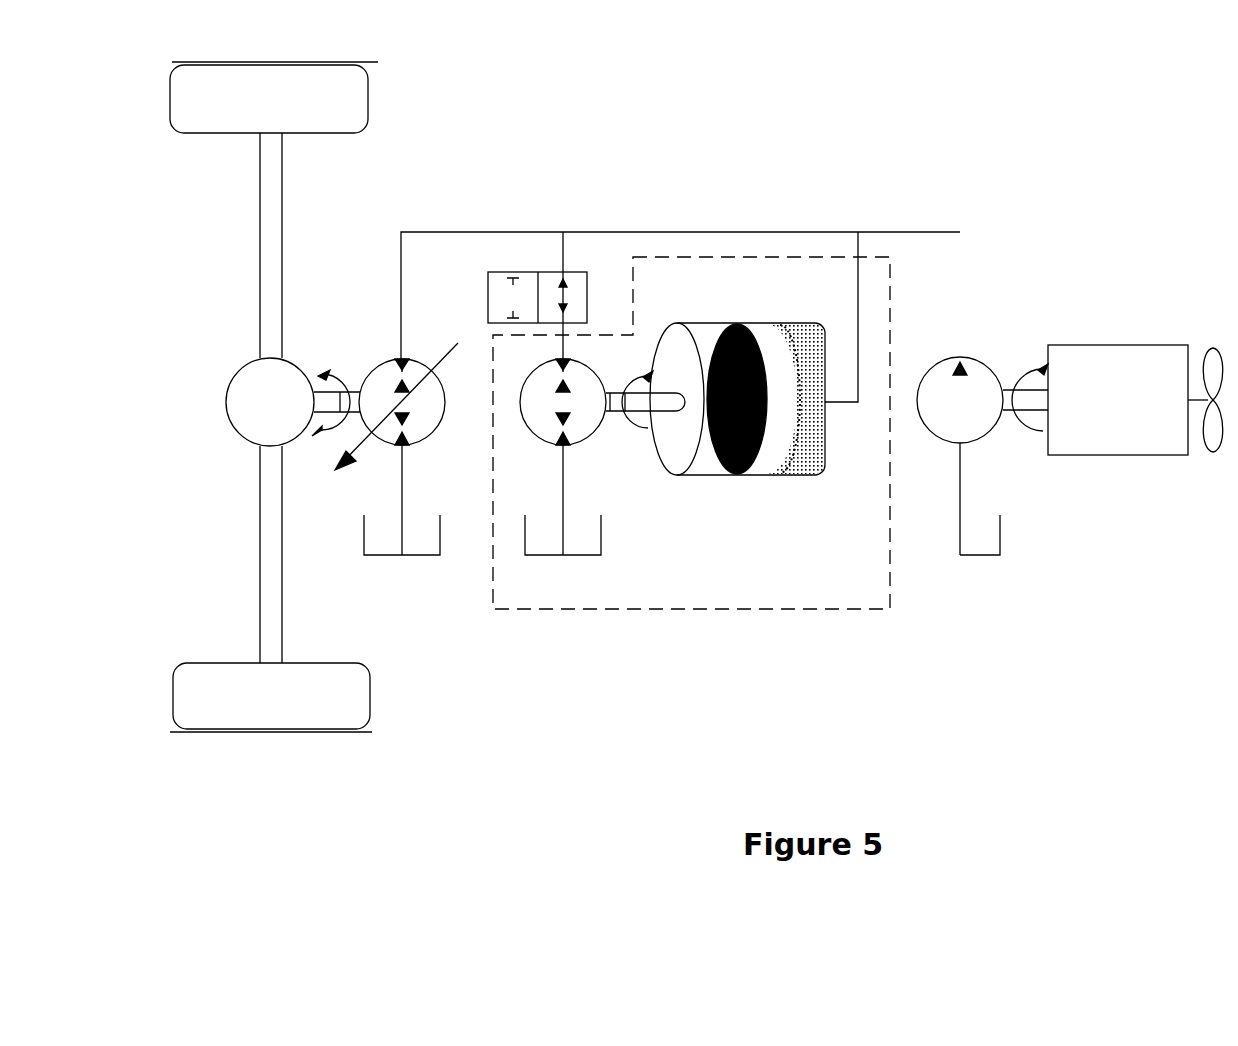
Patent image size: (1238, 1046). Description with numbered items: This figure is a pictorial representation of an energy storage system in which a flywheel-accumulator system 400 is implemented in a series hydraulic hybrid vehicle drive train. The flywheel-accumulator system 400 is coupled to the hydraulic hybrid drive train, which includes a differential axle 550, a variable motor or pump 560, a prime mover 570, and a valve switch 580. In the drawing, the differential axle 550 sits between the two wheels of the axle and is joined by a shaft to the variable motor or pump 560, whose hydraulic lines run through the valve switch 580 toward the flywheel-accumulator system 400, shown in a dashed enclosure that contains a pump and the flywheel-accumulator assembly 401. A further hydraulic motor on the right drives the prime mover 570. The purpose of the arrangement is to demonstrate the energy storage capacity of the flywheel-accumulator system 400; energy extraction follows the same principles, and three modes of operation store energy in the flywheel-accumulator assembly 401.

The differential axle 550 is at (270, 404).
The variable motor or pump 560 is at (425, 453).
The valve switch 580 is at (577, 272).
The flywheel-accumulator system 400 is at (791, 610).
The flywheel-accumulator assembly 401 is at (778, 477).
The prime mover 570 is at (1135, 408).